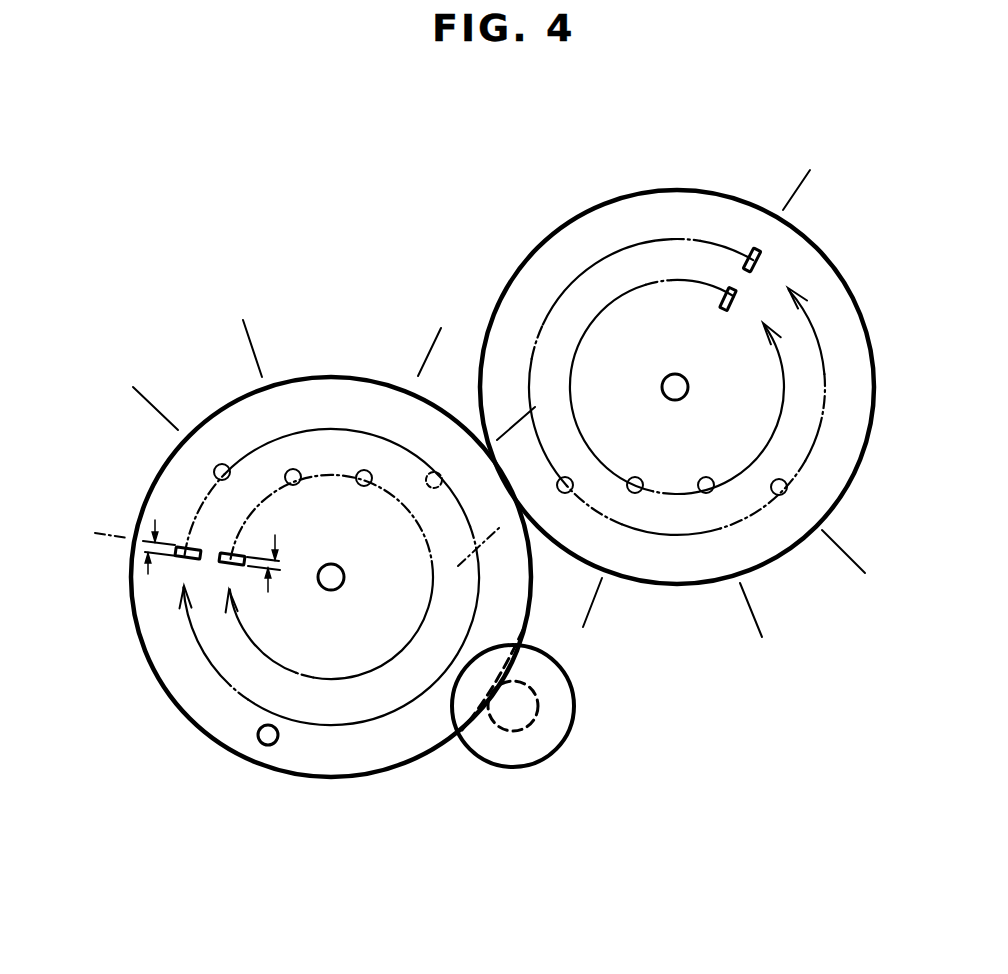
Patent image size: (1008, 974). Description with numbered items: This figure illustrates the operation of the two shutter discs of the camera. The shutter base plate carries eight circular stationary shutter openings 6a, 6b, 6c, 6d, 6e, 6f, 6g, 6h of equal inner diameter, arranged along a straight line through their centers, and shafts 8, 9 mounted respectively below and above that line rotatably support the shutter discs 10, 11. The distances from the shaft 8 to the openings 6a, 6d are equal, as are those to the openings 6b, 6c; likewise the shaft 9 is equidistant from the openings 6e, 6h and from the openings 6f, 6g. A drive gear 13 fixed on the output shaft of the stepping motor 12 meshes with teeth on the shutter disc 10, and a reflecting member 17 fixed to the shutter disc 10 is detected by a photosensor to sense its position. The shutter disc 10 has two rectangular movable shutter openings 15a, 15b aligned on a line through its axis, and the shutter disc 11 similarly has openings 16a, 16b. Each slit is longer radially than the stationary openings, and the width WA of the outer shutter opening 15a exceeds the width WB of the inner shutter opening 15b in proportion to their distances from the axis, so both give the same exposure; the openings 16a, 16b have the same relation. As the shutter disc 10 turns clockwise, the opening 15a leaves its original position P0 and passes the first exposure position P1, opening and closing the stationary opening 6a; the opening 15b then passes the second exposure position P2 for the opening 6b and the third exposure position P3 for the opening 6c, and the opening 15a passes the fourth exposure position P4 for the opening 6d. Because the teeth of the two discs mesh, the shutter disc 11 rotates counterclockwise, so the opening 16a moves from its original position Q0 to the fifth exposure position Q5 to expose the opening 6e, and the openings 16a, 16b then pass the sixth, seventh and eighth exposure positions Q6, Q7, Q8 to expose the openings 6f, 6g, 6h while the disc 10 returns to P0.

The shutter disc 10 is at (203, 732).
The shutter disc 11 is at (620, 190).
The stepping motor 12 is at (537, 763).
The drive gear 13 is at (538, 706).
The shaft 8 is at (331, 590).
The shaft 9 is at (688, 388).
The reflecting member 17 is at (268, 745).
The stationary shutter opening 6a is at (214, 470).
The stationary shutter opening 6b is at (294, 469).
The stationary shutter opening 6c is at (365, 470).
The stationary shutter opening 6d is at (428, 488).
The stationary shutter opening 6e is at (565, 493).
The stationary shutter opening 6f is at (635, 493).
The stationary shutter opening 6g is at (706, 493).
The stationary shutter opening 6h is at (780, 495).
The outer shutter opening 15a is at (183, 560).
The inner shutter opening 15b is at (233, 555).
The shutter opening 16a is at (753, 250).
The shutter opening 16b is at (738, 298).
The width of the outer shutter opening WA is at (168, 533).
The width of the inner shutter opening WB is at (264, 583).
The original position P0 is at (90, 528).
The first exposure position P1 is at (148, 392).
The second exposure position P2 is at (246, 335).
The third exposure position P3 is at (434, 335).
The fourth exposure position P4 is at (530, 408).
The original position Q0 is at (813, 176).
The fifth exposure position Q5 is at (465, 558).
The sixth exposure position Q6 is at (587, 622).
The seventh exposure position Q7 is at (763, 629).
The eighth exposure position Q8 is at (858, 570).